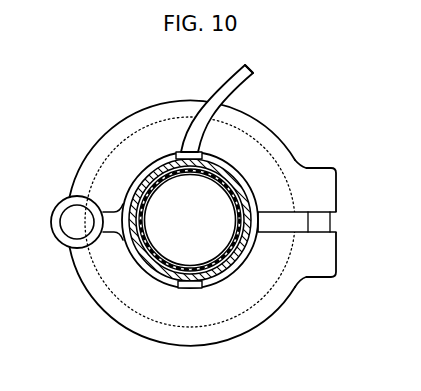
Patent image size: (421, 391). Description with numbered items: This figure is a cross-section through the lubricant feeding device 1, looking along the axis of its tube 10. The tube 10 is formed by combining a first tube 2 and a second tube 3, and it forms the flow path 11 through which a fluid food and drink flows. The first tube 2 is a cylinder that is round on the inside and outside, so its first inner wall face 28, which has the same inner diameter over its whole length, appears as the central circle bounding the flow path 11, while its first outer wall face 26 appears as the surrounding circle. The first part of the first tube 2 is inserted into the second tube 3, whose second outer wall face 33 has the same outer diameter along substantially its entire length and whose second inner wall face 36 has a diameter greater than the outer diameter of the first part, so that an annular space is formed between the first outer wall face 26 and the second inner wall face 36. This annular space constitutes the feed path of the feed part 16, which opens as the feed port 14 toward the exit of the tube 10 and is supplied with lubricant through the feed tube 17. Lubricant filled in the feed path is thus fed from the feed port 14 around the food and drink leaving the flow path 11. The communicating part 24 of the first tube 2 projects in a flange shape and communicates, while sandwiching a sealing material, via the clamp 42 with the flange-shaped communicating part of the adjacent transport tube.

The lubricant feeding device 1 is at (214, 224).
The first tube 2 is at (187, 270).
The second tube 3 is at (222, 272).
The tube 10 is at (177, 221).
The flow path 11 is at (188, 212).
The feed port 14 is at (186, 221).
The feed part 16 is at (225, 99).
The feed tube 17 is at (224, 90).
The communicating part 24 is at (282, 220).
The first outer wall face 26 is at (172, 272).
The first inner wall face 28 is at (159, 258).
The second outer wall face 33 is at (232, 266).
The second inner wall face 36 is at (230, 249).
The clamp 42 is at (80, 178).